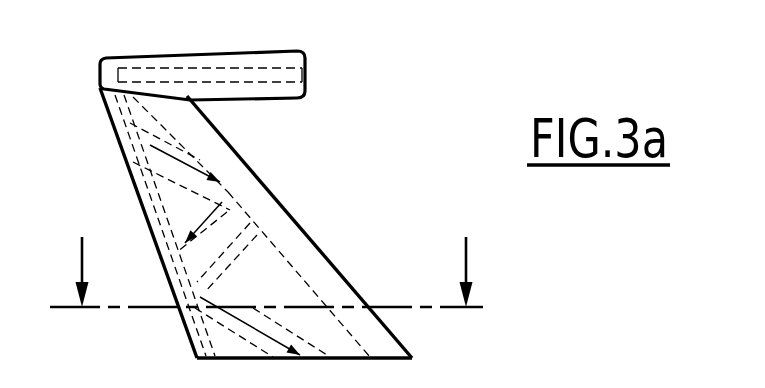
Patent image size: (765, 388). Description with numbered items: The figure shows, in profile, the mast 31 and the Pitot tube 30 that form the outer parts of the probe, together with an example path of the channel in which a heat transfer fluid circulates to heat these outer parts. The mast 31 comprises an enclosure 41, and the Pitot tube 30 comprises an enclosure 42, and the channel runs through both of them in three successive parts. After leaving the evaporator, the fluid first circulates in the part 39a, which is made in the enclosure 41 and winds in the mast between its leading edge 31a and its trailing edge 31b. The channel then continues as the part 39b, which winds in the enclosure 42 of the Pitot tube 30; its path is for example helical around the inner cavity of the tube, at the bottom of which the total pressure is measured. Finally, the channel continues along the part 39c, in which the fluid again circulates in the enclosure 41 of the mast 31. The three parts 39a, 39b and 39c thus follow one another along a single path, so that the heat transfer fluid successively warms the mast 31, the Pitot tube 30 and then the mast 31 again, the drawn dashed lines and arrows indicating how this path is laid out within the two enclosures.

The Pitot tube 30 is at (283, 104).
The mast 31 is at (306, 231).
The leading edge 31a is at (281, 205).
The trailing edge 31b is at (143, 208).
The first part of the channel 39a is at (120, 150).
The second part of the channel 39b is at (188, 63).
The third part of the channel 39c is at (238, 153).
The enclosure of the mast 41 is at (313, 268).
The enclosure of the tube 42 is at (213, 89).